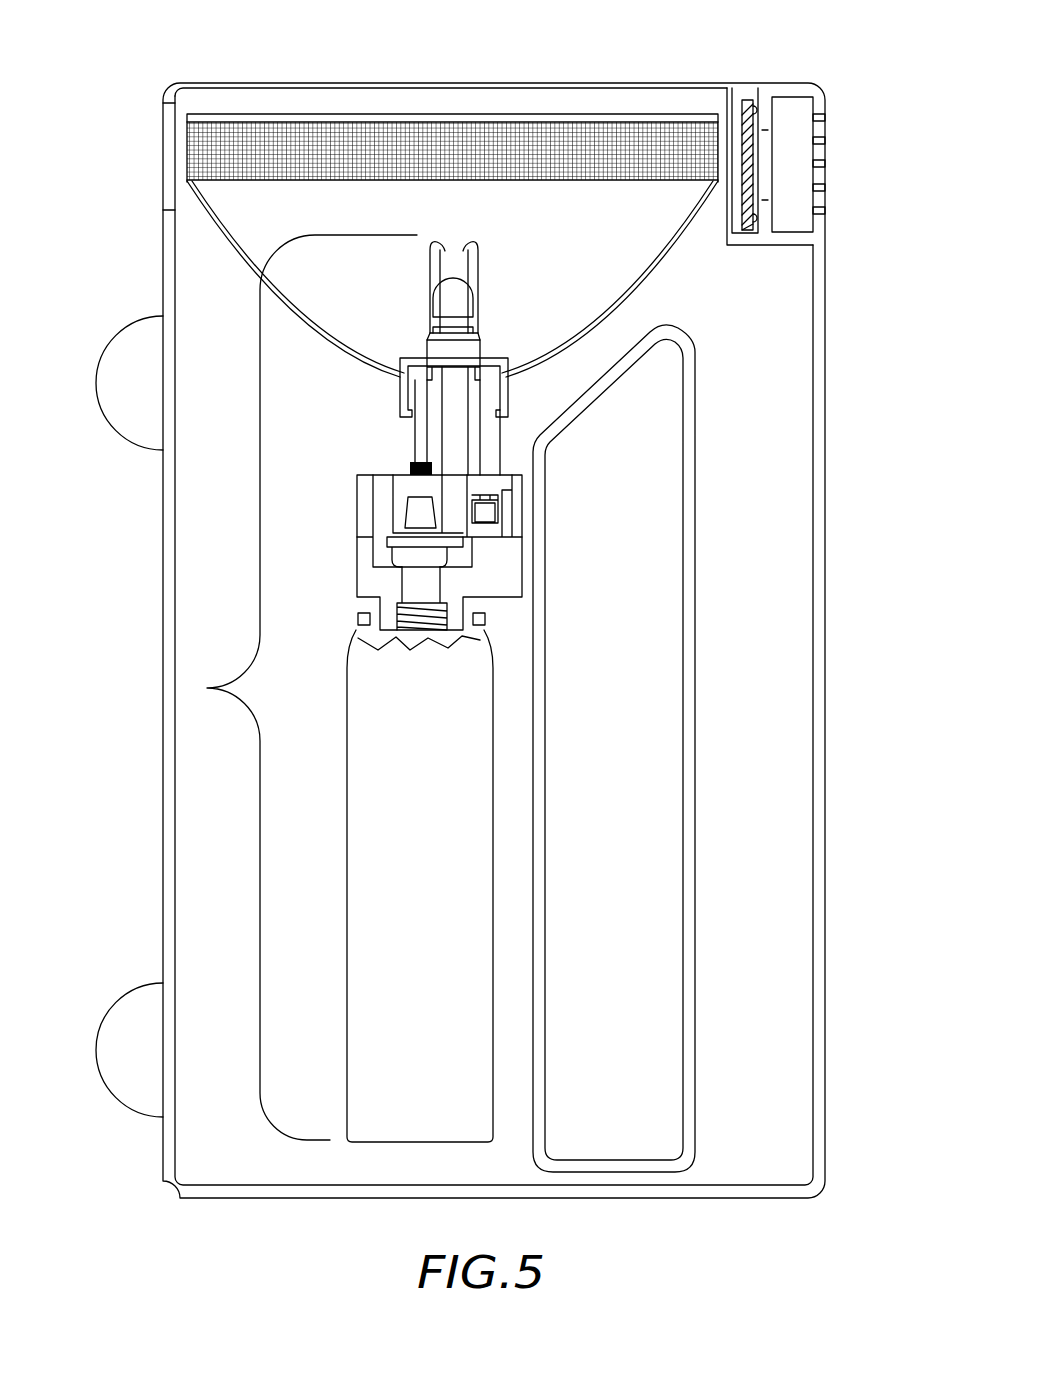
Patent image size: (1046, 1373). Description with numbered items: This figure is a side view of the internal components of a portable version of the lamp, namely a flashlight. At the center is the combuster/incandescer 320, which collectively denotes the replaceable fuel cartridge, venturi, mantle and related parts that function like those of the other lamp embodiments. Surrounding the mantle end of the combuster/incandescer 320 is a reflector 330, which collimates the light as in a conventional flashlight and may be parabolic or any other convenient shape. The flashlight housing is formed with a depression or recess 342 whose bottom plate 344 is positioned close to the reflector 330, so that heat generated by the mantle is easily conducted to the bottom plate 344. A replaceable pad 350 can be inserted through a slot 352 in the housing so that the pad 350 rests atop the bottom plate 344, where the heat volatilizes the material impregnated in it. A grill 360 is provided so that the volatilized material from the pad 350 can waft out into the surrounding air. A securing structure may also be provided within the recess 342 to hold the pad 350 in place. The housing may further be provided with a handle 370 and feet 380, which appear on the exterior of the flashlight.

The combuster/incandescer 320 is at (200, 688).
The reflector 330 is at (203, 207).
The recess 342 is at (800, 108).
The bottom plate 344 is at (727, 100).
The replaceable pad 350 is at (753, 172).
The slot 352 is at (750, 92).
The grill 360 is at (827, 140).
The handle 370 is at (767, 1153).
The feet 380 is at (115, 373).